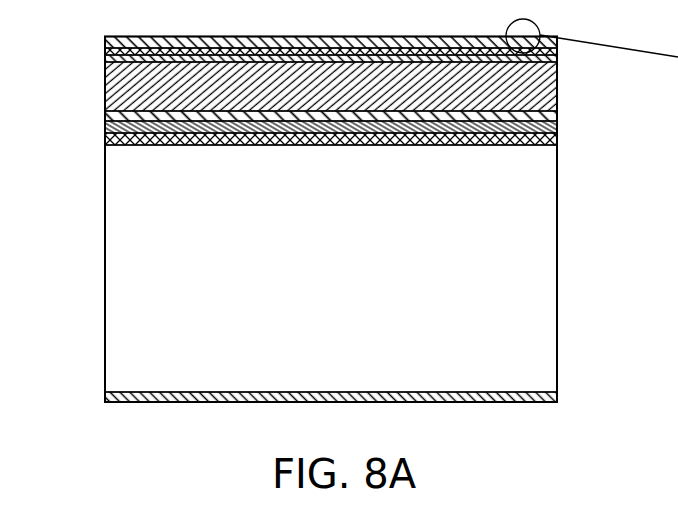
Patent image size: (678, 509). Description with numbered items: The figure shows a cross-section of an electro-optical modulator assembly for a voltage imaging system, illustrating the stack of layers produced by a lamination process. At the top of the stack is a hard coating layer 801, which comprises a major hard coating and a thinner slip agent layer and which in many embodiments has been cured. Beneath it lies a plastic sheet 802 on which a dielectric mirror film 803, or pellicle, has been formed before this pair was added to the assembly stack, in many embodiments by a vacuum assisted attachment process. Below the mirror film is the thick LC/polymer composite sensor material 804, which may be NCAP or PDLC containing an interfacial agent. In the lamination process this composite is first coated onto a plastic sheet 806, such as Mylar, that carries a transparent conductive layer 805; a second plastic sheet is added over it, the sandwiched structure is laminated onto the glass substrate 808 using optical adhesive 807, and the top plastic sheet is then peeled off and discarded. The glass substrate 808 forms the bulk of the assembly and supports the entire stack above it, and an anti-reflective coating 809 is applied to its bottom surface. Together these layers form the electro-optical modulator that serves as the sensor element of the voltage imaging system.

The hard coating layer 801 is at (103, 38).
The plastic sheet 802 is at (103, 50).
The dielectric mirror film 803 is at (103, 62).
The LC/polymer composite sensor material 804 is at (559, 87).
The transparent conductive layer 805 is at (559, 115).
The plastic sheet 806 is at (103, 127).
The optical adhesive 807 is at (559, 139).
The glass substrate 808 is at (559, 295).
The anti-reflective coating 809 is at (559, 397).